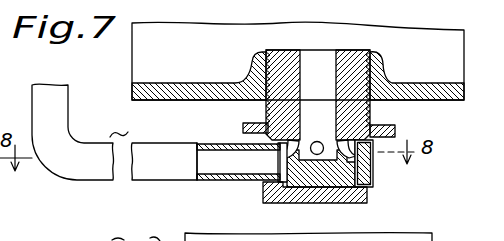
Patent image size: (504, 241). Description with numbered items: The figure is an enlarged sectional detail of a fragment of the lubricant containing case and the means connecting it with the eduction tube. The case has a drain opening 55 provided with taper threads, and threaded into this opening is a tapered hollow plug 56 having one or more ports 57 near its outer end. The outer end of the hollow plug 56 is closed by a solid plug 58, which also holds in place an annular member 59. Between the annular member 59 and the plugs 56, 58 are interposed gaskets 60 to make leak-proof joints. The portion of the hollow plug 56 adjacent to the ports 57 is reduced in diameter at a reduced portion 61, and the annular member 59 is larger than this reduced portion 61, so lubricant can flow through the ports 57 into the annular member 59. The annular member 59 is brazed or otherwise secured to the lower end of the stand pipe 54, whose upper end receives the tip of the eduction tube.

The stand pipe 54 is at (164, 170).
The drain opening 55 is at (369, 52).
The tapered hollow plug 56 is at (277, 62).
The ports 57 is at (373, 168).
The solid plug 58 is at (325, 200).
The annular member 59 is at (372, 181).
The gaskets 60 is at (380, 124).
The reduced portion 61 is at (289, 202).